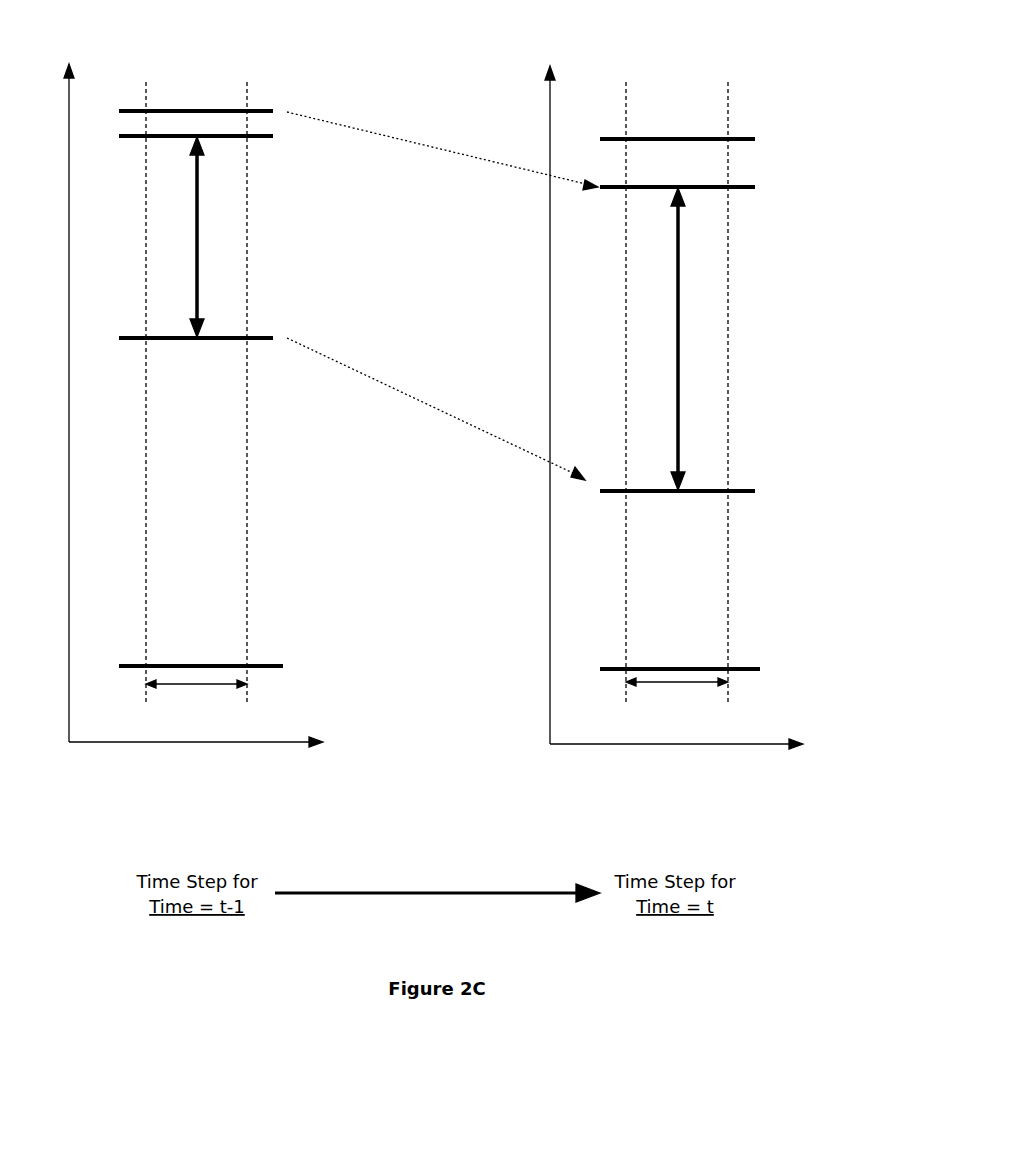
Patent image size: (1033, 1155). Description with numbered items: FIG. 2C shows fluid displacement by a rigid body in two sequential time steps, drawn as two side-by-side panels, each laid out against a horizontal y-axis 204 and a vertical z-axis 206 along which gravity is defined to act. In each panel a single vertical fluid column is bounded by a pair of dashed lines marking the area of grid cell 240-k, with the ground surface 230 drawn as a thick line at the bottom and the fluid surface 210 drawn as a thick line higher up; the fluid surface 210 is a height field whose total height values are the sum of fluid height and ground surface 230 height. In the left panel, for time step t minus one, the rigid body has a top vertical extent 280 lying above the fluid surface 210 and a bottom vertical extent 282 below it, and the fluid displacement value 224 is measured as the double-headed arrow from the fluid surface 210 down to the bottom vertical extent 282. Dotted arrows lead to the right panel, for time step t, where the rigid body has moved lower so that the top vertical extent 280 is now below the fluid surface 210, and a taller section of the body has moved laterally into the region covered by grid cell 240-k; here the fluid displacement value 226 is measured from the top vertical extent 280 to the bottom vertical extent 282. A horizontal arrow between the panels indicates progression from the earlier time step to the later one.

The y-axis 204 is at (464, 756).
The z-axis 206 is at (309, 382).
The fluid surface 210 is at (262, 138).
The fluid displacement value 224 is at (197, 287).
The fluid displacement value 226 is at (676, 290).
The ground surface 230 is at (695, 667).
The grid cell 240-k is at (195, 686).
The top vertical extent 280 is at (262, 110).
The bottom vertical extent 282 is at (254, 343).